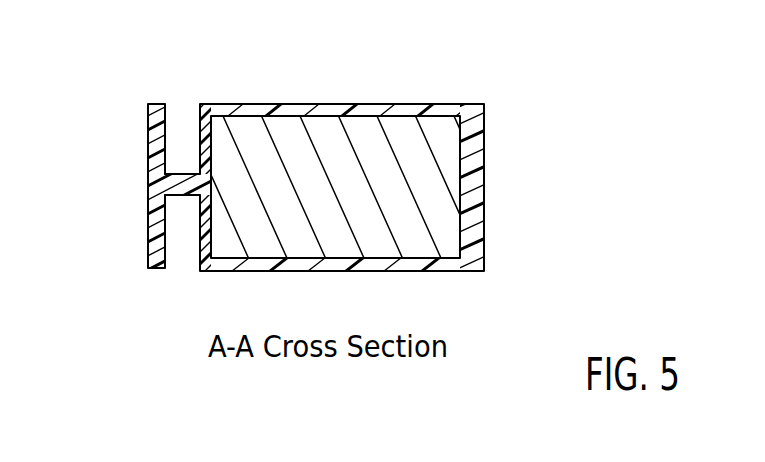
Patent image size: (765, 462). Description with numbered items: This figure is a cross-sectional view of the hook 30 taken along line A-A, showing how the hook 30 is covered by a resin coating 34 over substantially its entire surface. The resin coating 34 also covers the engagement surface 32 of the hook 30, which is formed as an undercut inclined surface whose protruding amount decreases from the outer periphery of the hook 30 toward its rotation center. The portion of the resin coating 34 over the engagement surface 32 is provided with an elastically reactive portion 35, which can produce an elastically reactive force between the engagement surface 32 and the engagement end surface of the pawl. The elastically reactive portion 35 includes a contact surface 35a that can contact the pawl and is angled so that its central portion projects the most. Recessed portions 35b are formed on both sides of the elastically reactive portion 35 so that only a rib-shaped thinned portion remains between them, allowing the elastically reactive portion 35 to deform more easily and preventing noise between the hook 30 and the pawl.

The hook 30 is at (422, 175).
The engagement surface 32 is at (200, 221).
The resin coating 34 is at (383, 108).
The elastically reactive portion 35 is at (134, 122).
The contact surface 35a is at (132, 190).
The recessed portions 35b is at (182, 142).